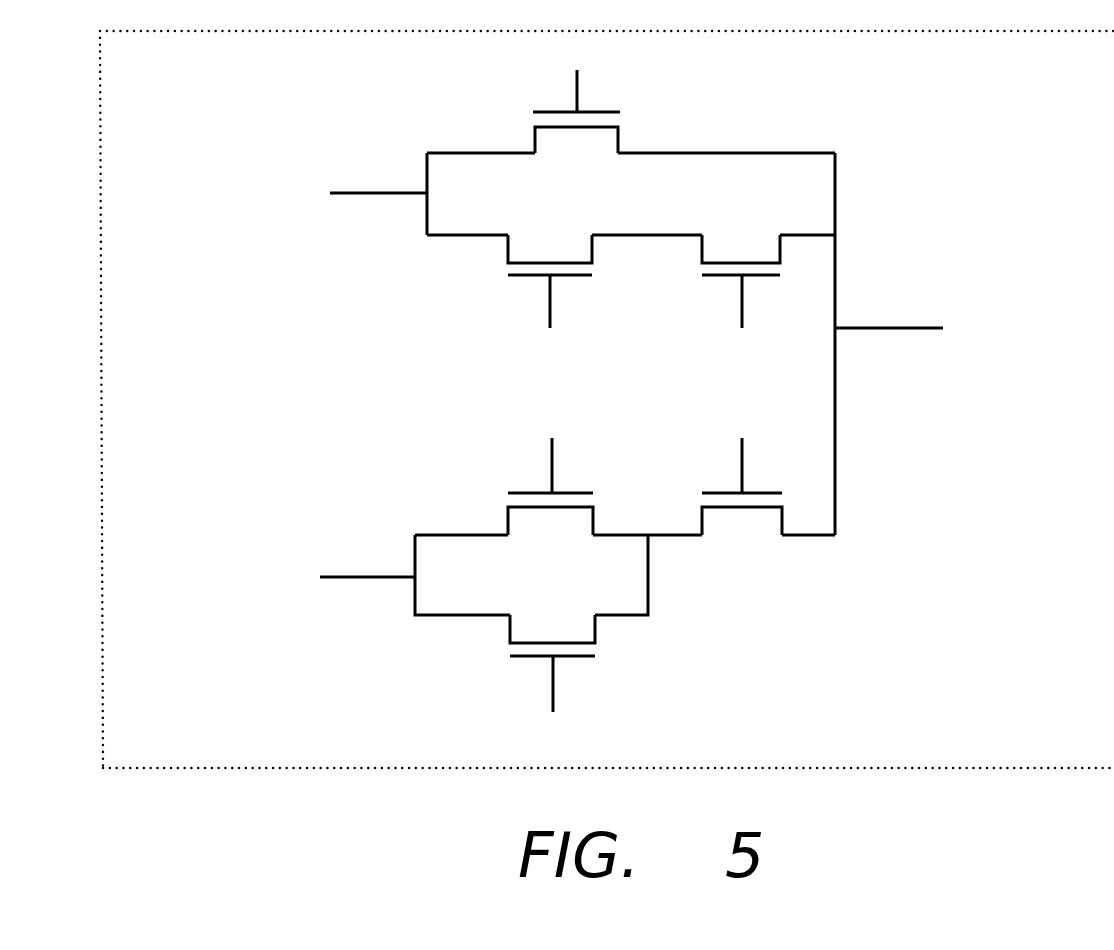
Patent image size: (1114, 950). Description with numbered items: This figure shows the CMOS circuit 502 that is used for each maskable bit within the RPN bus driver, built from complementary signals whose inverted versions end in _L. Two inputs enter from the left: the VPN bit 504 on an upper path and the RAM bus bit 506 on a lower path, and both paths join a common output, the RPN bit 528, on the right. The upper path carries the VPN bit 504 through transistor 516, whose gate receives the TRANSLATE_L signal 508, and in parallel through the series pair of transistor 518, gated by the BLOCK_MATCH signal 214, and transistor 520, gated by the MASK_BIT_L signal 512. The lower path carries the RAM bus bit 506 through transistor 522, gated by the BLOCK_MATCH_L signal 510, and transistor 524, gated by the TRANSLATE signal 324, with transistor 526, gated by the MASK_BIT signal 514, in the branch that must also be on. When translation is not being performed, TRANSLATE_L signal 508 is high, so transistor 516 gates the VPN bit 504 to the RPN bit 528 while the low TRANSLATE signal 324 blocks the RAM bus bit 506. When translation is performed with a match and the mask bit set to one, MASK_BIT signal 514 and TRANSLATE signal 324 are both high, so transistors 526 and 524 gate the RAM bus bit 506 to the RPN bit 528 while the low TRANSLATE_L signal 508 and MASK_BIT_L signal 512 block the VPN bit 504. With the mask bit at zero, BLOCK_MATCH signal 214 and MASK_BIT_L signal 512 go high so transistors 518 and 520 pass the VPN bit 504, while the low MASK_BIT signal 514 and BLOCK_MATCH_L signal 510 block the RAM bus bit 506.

The translation cell 502 is at (875, 32).
The VPN bit 504 is at (372, 193).
The RAM bus bit 506 is at (327, 577).
The TRANSLATE_L signal 508 is at (577, 97).
The BLOCK_MATCH_L signal 510 is at (552, 482).
The MASK_BIT_L signal 512 is at (742, 300).
The MASK_BIT signal 514 is at (553, 698).
The transistor 516 is at (548, 111).
The transistor 518 is at (520, 277).
The transistor 520 is at (710, 278).
The gate of block_match_L transistor 522 is at (525, 492).
The transistor 524 is at (715, 492).
The transistor 526 is at (520, 658).
The BLOCK_MATCH signal 214 is at (550, 300).
The TRANSLATE signal 324 is at (742, 482).
The RPN bit 528 is at (862, 330).